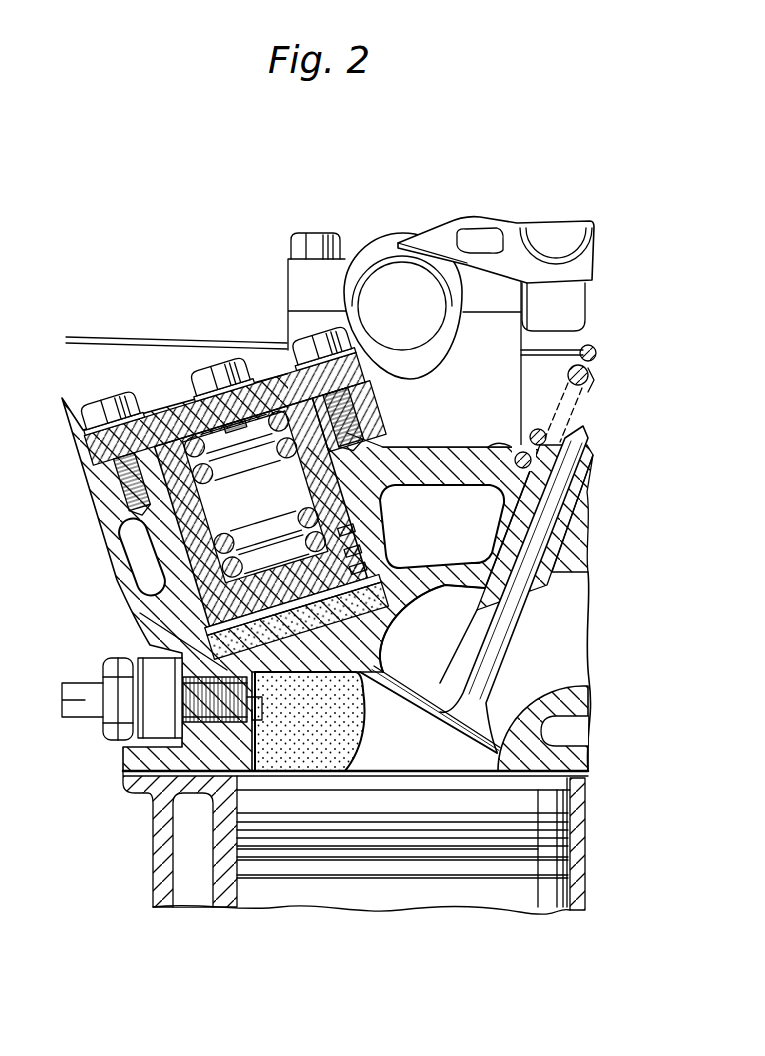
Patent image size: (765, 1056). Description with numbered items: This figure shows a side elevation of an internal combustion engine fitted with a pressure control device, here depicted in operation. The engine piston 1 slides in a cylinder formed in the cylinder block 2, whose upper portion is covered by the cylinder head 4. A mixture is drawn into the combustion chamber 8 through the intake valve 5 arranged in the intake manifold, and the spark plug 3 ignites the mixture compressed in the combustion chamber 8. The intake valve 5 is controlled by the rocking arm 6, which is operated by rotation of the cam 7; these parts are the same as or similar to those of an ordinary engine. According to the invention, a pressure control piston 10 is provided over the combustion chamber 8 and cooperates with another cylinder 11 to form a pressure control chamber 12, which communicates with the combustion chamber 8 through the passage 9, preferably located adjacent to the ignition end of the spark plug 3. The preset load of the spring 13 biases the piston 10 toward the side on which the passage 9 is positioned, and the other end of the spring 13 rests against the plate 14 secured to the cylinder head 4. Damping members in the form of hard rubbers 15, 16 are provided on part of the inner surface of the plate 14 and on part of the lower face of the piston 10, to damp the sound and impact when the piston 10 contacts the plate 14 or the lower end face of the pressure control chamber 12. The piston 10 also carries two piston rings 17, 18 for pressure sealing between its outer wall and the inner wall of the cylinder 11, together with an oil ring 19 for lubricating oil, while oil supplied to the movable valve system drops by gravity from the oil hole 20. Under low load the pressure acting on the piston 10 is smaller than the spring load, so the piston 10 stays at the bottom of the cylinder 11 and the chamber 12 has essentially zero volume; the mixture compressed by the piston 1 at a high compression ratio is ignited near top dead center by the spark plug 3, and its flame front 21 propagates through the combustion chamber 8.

The piston 1 is at (318, 863).
The cylinder block 2 is at (170, 783).
The spark plug 3 is at (117, 705).
The cylinder head 4 is at (543, 738).
The intake valve 5 is at (480, 643).
The rocking arm 6 is at (580, 270).
The cam 7 is at (390, 265).
The combustion chamber 8 is at (420, 743).
The passage 9 is at (168, 640).
The piston 10 is at (117, 540).
The cylinder 11 is at (170, 477).
The pressure control chamber 12 is at (170, 620).
The spring 13 is at (270, 383).
The plate 14 is at (281, 413).
The hard rubber 15 is at (163, 417).
The hard rubber 16 is at (413, 563).
The piston ring 17 is at (358, 550).
The piston ring 18 is at (360, 530).
The oil ring 19 is at (377, 530).
The oil hole 20 is at (380, 450).
The flame front 21 is at (357, 705).